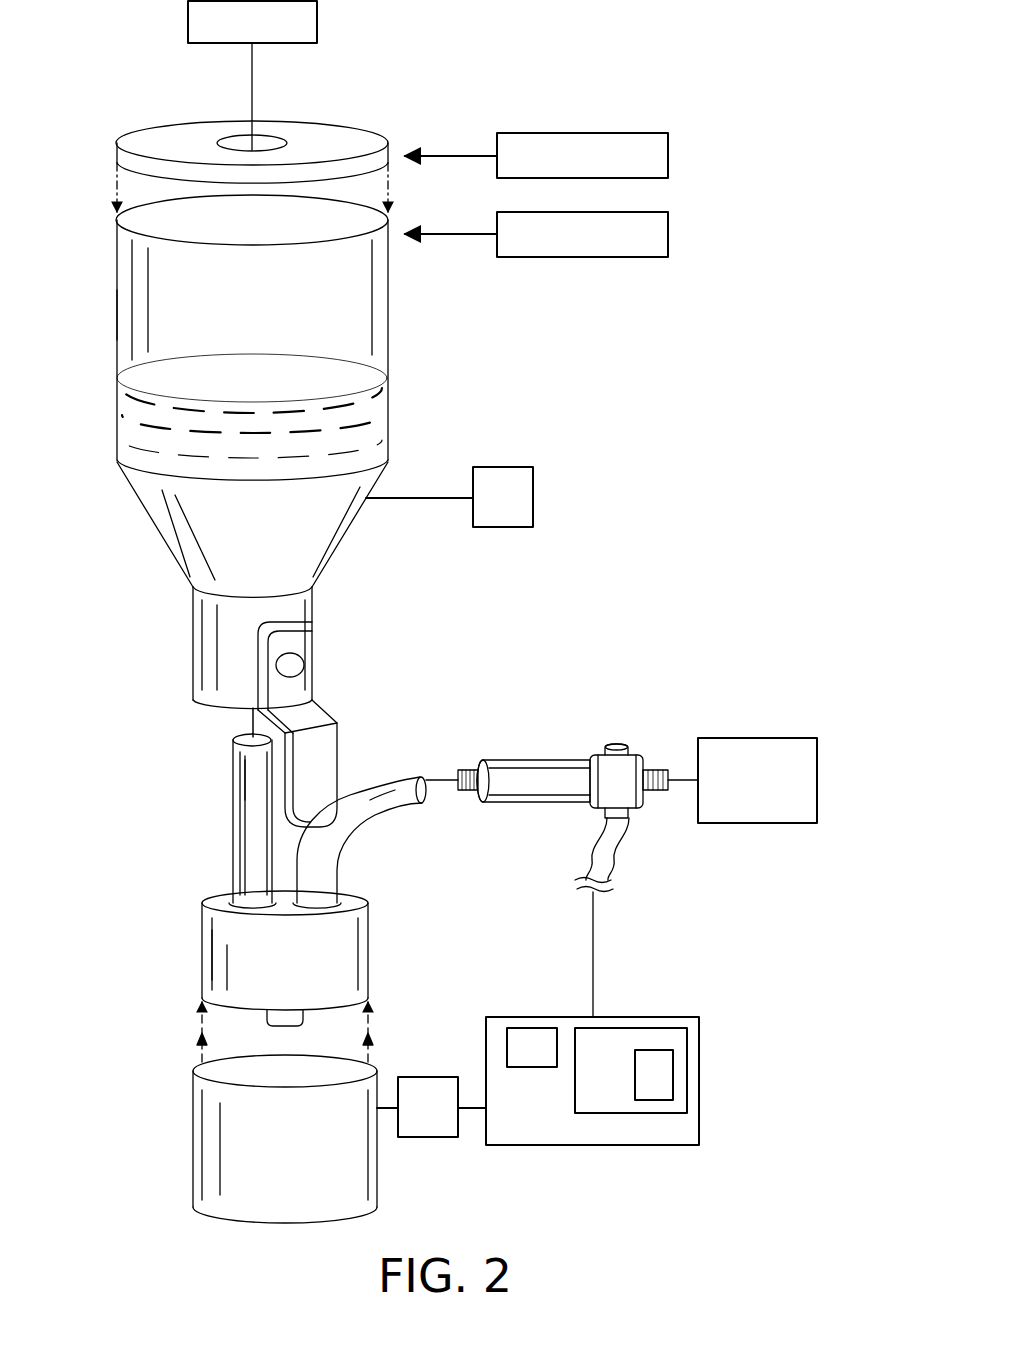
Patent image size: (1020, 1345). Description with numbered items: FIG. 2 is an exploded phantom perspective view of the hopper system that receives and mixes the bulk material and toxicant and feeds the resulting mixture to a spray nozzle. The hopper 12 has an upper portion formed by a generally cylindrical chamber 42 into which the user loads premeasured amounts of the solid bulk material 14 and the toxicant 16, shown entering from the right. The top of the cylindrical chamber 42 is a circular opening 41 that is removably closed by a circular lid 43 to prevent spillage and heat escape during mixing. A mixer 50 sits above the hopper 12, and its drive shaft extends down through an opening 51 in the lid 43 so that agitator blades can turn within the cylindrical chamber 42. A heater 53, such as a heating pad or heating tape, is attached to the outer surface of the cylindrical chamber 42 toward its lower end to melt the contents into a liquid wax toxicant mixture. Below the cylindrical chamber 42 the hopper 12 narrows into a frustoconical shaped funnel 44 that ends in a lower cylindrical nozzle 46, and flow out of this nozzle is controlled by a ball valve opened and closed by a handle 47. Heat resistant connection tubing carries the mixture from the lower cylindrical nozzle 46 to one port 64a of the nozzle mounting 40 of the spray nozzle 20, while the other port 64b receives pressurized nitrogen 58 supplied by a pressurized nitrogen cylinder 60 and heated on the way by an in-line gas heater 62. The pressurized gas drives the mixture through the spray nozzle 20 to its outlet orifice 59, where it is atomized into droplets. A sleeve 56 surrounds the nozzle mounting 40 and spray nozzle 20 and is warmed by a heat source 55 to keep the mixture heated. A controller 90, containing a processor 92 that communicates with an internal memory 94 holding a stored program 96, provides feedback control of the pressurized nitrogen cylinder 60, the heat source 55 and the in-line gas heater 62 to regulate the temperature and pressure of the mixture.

The hopper 12 is at (408, 300).
The solid bulk material 14 is at (668, 158).
The toxicant 16 is at (668, 238).
The spray nozzle 20 is at (225, 942).
The nozzle mounting 40 is at (208, 905).
The circular opening 41 is at (138, 210).
The cylindrical chamber 42 is at (117, 308).
The lid 43 is at (328, 138).
The frustoconical shaped funnel 44 is at (175, 525).
The lower cylindrical nozzle 46 is at (218, 672).
The handle 47 is at (315, 718).
The mixer 50 is at (317, 19).
The opening 51 is at (234, 136).
The heater 53 is at (533, 498).
The heat source 55 is at (425, 1077).
The sleeve 56 is at (195, 1136).
The pressurized nitrogen 58 is at (436, 780).
The outlet orifice 59 is at (283, 1028).
The pressurized nitrogen cylinder 60 is at (817, 782).
The in-line gas heater 62 is at (535, 768).
The first port 64a is at (228, 895).
The second port 64b is at (338, 888).
The controller 90 is at (592, 1089).
The processor 92 is at (533, 1028).
The internal memory 94 is at (630, 1028).
The stored program 96 is at (652, 1050).